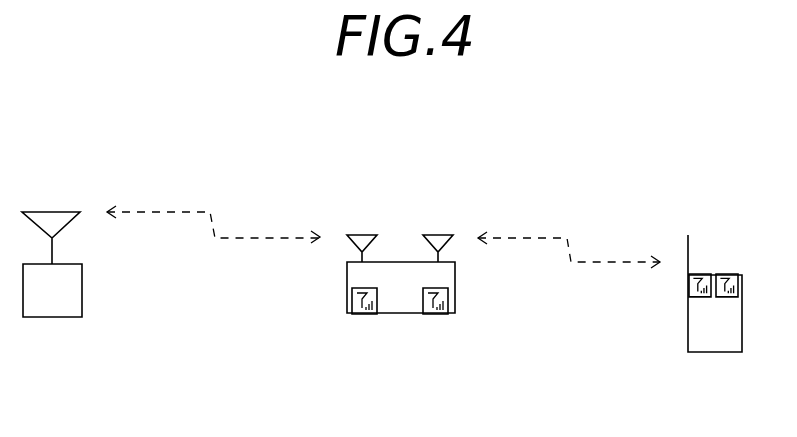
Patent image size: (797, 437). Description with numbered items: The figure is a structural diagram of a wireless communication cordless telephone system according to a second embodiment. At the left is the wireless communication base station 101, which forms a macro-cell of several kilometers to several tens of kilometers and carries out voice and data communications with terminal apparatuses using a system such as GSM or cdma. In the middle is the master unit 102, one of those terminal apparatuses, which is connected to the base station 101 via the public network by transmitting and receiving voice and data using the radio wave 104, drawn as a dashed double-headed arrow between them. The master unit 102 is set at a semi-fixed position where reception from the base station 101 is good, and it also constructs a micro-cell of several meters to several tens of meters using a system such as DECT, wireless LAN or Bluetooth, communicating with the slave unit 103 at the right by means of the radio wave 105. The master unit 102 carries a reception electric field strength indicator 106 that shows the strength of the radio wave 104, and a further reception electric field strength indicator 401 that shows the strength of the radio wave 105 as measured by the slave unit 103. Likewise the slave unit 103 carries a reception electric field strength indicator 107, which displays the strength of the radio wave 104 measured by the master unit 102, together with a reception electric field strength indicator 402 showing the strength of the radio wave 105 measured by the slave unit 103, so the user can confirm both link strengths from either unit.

The wireless communication base station 101 is at (51, 302).
The wireless communication cordless telephone master unit 102 is at (413, 317).
The wireless communication cordless telephone slave unit 103 is at (726, 288).
The radio wave 104 is at (177, 212).
The radio wave 105 is at (530, 238).
The reception electric field strength indicator 106 is at (350, 310).
The reception electric field strength indicator 107 is at (700, 280).
The reception electric field strength indicator 401 is at (450, 311).
The reception electric field strength indicator 402 is at (728, 280).